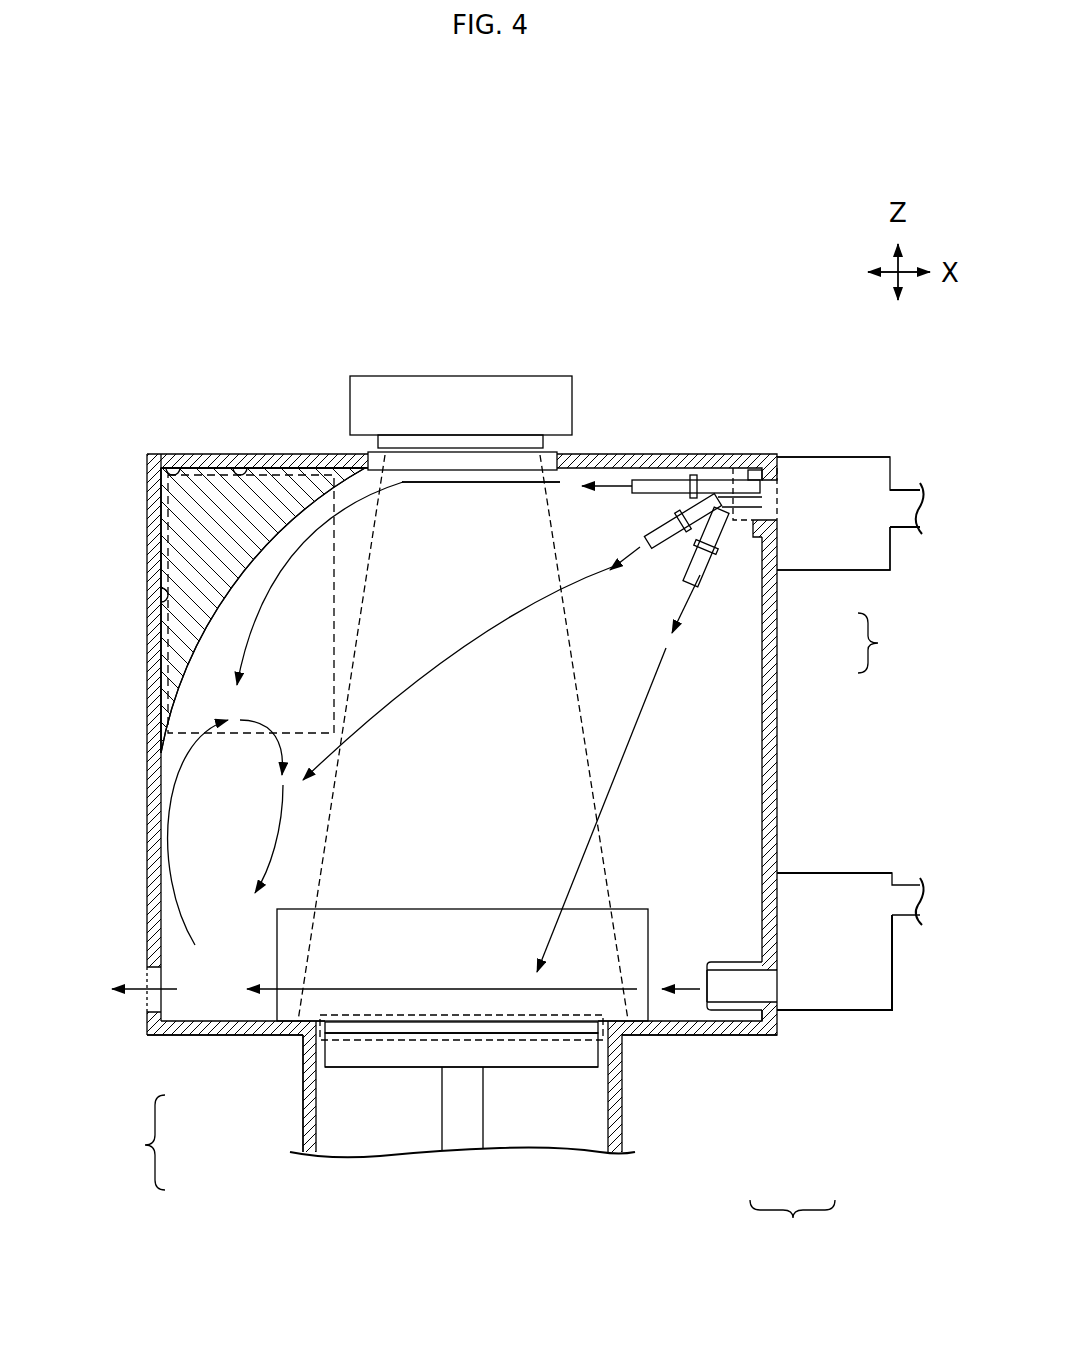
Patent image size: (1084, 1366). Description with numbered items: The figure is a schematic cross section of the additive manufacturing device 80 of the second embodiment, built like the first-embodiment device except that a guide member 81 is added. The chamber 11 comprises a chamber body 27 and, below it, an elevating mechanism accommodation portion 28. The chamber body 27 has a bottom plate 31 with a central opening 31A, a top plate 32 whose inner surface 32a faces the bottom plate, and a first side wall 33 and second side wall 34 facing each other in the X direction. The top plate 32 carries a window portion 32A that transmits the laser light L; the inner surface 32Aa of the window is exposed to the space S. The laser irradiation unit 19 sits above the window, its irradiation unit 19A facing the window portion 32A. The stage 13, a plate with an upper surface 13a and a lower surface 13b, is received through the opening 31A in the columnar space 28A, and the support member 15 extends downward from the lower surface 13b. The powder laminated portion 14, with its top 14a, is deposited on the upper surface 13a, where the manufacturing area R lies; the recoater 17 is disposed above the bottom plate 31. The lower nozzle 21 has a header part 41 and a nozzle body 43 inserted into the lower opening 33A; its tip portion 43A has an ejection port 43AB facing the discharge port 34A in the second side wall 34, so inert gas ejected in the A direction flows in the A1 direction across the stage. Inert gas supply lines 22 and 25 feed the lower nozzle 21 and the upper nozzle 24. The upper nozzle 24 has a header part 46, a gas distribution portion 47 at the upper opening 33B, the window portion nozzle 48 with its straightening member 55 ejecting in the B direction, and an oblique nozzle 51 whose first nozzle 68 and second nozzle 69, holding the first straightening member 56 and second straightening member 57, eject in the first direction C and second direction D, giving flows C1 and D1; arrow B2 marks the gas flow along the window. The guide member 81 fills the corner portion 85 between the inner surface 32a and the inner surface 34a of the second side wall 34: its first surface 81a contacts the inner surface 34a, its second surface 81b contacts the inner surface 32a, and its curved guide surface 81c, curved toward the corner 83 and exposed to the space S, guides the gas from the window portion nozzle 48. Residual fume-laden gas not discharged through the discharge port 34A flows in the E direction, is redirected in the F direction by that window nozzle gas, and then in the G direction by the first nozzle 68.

The additive manufacturing device 80 is at (98, 339).
The chamber 11 is at (138, 1142).
The chamber body 27 is at (247, 1040).
The elevating mechanism accommodation portion 28 is at (301, 1097).
The columnar space 28A is at (306, 1118).
The stage 13 is at (365, 1053).
The upper surface 13a is at (403, 1031).
The lower surface 13b is at (407, 1068).
The powder laminated portion 14 is at (527, 1028).
The stage upper surface 14a is at (487, 1014).
The support member 15 is at (473, 1108).
The recoater 17 is at (443, 930).
The laser irradiation unit 19 is at (500, 374).
The irradiation unit 19A is at (445, 440).
The lower nozzle 21 is at (792, 1222).
The inert gas supply line 22 is at (902, 896).
The upper nozzle 24 is at (818, 454).
The inert gas supply line 25 is at (903, 500).
The bottom plate 31 is at (175, 1036).
The opening 31A is at (347, 1020).
The top plate 32 is at (190, 452).
The inner surface of top plate 32a is at (244, 470).
The window portion 32A is at (410, 460).
The inner surface of window portion 32Aa is at (495, 478).
The first side wall 33 is at (780, 748).
The lower opening 33A is at (770, 980).
The upper opening 33B is at (750, 478).
The second side wall 34 is at (150, 848).
The inner surface of second side wall 34a is at (168, 592).
The discharge port 34A is at (153, 975).
The header part 41 is at (833, 988).
The nozzle body 43 is at (738, 1017).
The tip portion 43A is at (733, 960).
The ejection port 43AB is at (700, 980).
The header part 46 is at (840, 480).
The gas distribution portion 47 is at (762, 487).
The window portion nozzle 48 is at (642, 481).
The oblique nozzle 51 is at (884, 643).
The straightening member 55 is at (692, 477).
The first straightening member 56 is at (670, 522).
The second straightening member 57 is at (722, 549).
The first nozzle 68 is at (703, 547).
The second nozzle 69 is at (700, 575).
The guide member 81 is at (193, 545).
The first surface 81a is at (162, 521).
The second surface 81b is at (310, 467).
The guide surface 81c is at (267, 558).
The corner 83 is at (180, 470).
The corner portion 85 is at (266, 470).
The A direction A is at (693, 1000).
The A1 direction A1 is at (612, 1018).
The B direction B is at (612, 480).
The air flow B2 is at (455, 483).
The first direction C is at (640, 547).
The C1 direction C1 is at (438, 655).
The second direction D is at (687, 608).
The D1 direction D1 is at (628, 757).
The E direction E is at (177, 783).
The F direction F is at (253, 718).
The G direction G is at (280, 835).
The laser light L is at (578, 660).
The manufacturing area R is at (562, 1040).
The space S is at (713, 715).